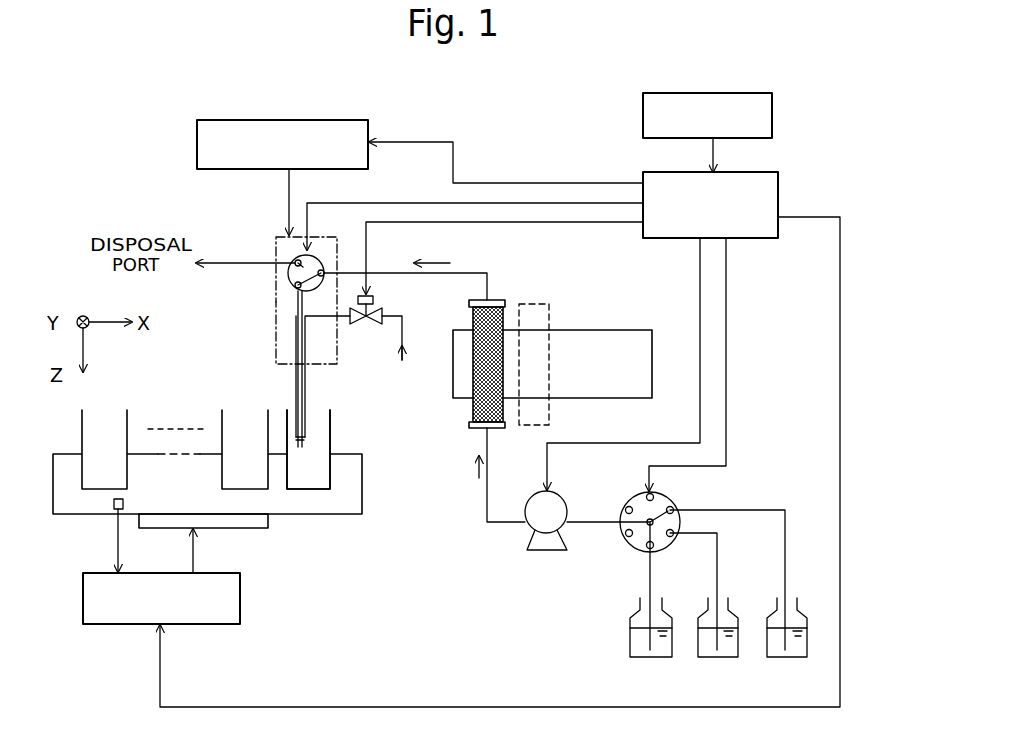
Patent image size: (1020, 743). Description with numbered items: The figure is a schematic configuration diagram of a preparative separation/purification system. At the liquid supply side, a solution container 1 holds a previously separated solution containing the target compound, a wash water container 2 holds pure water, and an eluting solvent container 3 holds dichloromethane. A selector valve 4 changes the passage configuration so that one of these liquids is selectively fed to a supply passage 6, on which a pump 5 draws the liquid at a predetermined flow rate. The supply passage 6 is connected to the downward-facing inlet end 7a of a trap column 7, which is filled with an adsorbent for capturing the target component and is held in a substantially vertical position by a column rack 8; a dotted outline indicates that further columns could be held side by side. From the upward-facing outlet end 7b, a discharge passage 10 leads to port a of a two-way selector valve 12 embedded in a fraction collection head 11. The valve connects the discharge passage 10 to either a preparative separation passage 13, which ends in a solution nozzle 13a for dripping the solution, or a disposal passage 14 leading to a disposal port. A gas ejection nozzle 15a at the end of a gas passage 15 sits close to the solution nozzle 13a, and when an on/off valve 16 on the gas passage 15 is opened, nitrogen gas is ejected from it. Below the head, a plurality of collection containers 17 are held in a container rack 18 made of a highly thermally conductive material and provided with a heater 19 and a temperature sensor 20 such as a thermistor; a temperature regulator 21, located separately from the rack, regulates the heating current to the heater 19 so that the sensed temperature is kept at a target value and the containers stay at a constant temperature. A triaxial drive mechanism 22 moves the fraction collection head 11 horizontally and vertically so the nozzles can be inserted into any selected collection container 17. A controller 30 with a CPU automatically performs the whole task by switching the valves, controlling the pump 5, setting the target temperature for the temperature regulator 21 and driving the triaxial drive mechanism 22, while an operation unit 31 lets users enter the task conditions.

The solution container 1 is at (638, 658).
The wash water container 2 is at (708, 658).
The eluting solvent container 3 is at (777, 658).
The selector valve 4 is at (634, 548).
The pump 5 is at (540, 552).
The supply passage 6 is at (488, 524).
The trap column 7 is at (473, 409).
The inlet end 7a is at (471, 431).
The outlet end 7b is at (498, 302).
The column rack 8 is at (617, 330).
The discharge passage 10 is at (488, 273).
The fraction collection head 11 is at (276, 301).
The two-way selector valve 12 is at (315, 253).
The preparative separation passage 13 is at (298, 338).
The solution nozzle 13a is at (298, 447).
The disposal passage 14 is at (240, 263).
The gas passage 15 is at (306, 384).
The gas ejection nozzle 15a is at (306, 437).
The on/off valve 16 is at (383, 310).
The collection container 17 is at (306, 490).
The container rack 18 is at (343, 515).
The heater 19 is at (243, 530).
The temperature sensor 20 is at (114, 504).
The temperature regulator 21 is at (240, 598).
The triaxial drive mechanism 22 is at (197, 142).
The controller 30 is at (778, 181).
The operation unit 31 is at (772, 115).